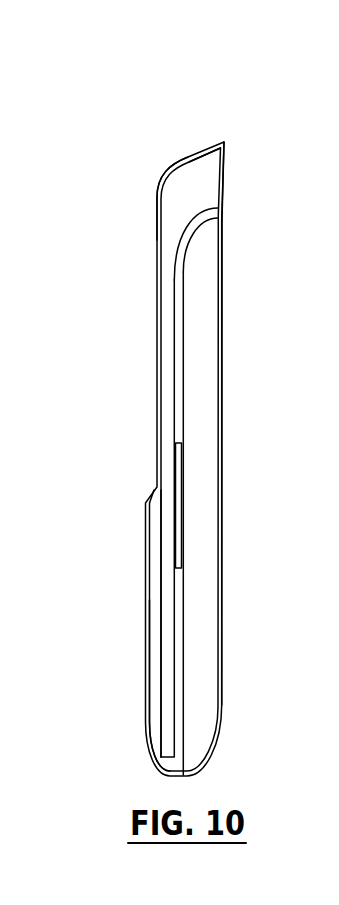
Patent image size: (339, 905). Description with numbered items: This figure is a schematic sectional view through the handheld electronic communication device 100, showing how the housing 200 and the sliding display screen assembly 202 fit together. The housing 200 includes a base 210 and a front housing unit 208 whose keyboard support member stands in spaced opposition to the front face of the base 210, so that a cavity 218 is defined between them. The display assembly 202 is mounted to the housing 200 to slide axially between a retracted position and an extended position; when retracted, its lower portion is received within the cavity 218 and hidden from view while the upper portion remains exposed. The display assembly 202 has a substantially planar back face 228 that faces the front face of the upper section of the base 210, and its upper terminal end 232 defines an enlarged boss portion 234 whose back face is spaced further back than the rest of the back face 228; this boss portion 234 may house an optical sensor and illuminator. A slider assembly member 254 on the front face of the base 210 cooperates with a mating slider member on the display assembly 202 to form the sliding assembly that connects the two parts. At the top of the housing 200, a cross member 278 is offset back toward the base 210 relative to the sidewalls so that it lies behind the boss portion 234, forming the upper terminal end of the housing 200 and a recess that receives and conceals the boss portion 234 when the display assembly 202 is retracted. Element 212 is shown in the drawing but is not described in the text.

The handheld electronic communication device 100 is at (150, 166).
The housing 200 is at (217, 732).
The sliding display screen assembly 202 is at (173, 328).
The front housing unit 208 is at (155, 208).
The base 210 is at (222, 297).
The lower side wall 212 is at (157, 552).
The cavity 218 is at (155, 675).
The back face 228 is at (181, 375).
The upper terminal end 232 is at (195, 187).
The enlarged boss portion 234 is at (221, 208).
The slider assembly member 254 is at (180, 483).
The cross member 278 is at (227, 157).